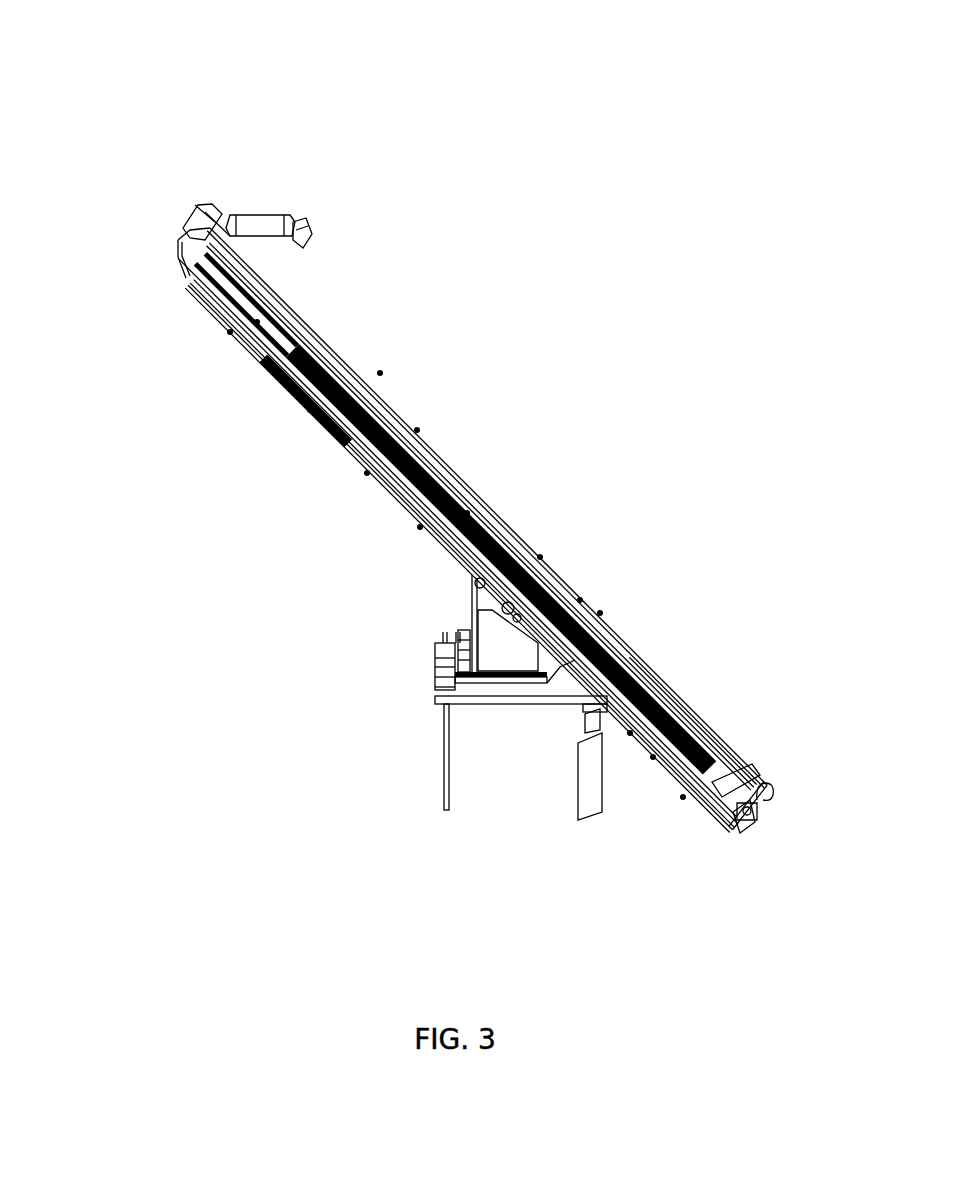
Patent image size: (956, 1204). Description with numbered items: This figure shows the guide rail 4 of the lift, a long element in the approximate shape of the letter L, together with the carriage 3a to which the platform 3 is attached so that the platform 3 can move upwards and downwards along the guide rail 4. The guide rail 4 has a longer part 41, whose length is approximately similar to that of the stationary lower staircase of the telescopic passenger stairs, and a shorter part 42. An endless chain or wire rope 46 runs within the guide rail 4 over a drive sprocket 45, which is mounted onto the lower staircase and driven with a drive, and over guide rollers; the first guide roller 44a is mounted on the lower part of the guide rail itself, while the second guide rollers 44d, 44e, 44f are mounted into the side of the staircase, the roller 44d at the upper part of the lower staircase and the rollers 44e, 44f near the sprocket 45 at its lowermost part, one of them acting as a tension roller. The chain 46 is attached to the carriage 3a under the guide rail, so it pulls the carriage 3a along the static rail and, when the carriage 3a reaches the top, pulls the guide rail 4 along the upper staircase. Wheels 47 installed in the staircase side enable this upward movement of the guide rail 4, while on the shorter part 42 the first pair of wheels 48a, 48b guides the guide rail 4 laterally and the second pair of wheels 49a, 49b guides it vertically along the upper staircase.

The platform 3 is at (417, 708).
The carriage 3a is at (470, 605).
The guide rail 4 is at (177, 652).
The longer part of the guide rail 41 is at (255, 358).
The shorter part of the guide rail 42 is at (267, 210).
The first guide roller 44a is at (713, 733).
The second guide roller 44d is at (283, 383).
The second guide roller 44e is at (757, 813).
The second guide roller 44f is at (773, 780).
The drive sprocket 45 is at (743, 827).
The endless chain 46 is at (308, 316).
The wheels 47 is at (230, 332).
The wheel 48a is at (187, 207).
The wheel 48b is at (312, 217).
The wheel 49a is at (213, 203).
The wheel 49b is at (198, 190).